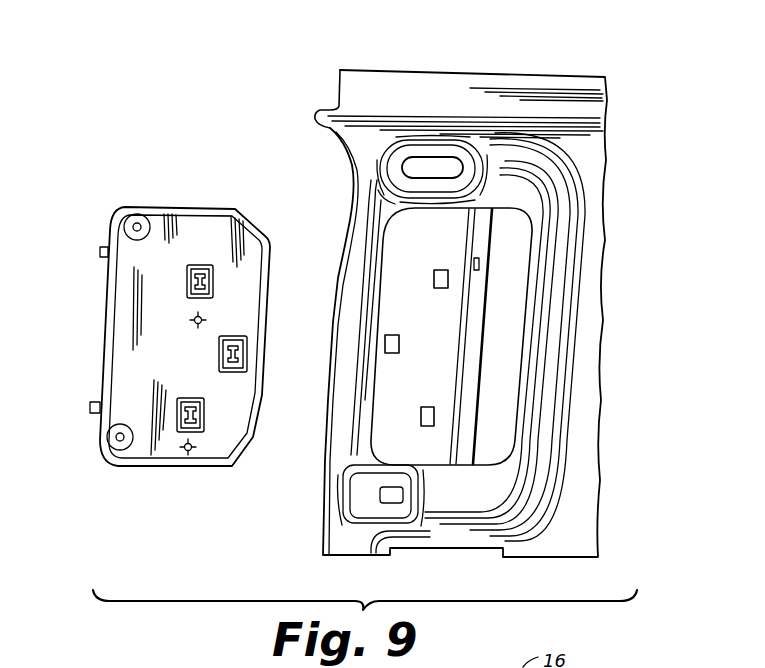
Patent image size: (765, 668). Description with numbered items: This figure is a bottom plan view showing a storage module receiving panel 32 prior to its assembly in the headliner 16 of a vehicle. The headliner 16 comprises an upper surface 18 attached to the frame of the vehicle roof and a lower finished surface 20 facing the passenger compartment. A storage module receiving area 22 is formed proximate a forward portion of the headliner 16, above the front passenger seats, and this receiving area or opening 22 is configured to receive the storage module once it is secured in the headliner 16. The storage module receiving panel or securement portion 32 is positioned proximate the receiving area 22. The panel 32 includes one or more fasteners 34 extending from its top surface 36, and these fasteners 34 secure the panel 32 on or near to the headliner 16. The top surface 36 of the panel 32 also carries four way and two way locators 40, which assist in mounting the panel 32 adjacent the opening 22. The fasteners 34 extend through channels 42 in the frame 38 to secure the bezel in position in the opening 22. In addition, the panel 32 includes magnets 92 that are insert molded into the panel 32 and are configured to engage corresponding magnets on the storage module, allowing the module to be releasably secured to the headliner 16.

The headliner 16 is at (522, 66).
The upper surface 18 is at (603, 297).
The lower finished surface 20 is at (573, 150).
The receiving area 22 is at (500, 437).
The storage module receiving panel 32 is at (122, 206).
The fasteners 34 is at (177, 417).
The top surface 36 is at (197, 209).
The frame 38 is at (428, 443).
The four way and two way locators 40 is at (205, 321).
The channels 42 is at (448, 278).
The magnets 92 is at (128, 224).